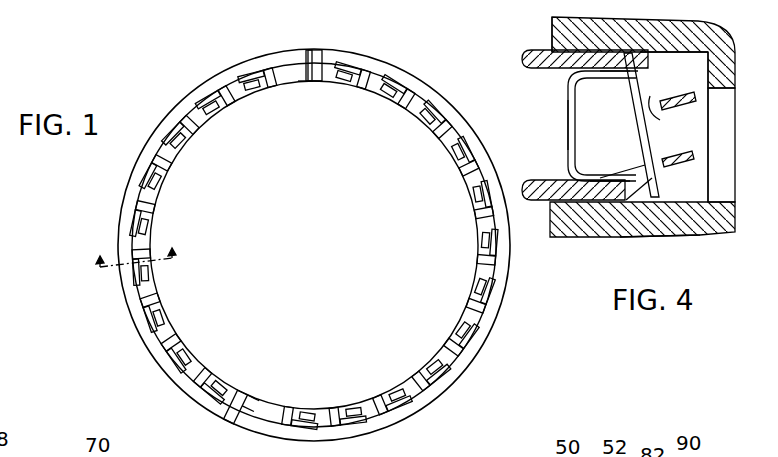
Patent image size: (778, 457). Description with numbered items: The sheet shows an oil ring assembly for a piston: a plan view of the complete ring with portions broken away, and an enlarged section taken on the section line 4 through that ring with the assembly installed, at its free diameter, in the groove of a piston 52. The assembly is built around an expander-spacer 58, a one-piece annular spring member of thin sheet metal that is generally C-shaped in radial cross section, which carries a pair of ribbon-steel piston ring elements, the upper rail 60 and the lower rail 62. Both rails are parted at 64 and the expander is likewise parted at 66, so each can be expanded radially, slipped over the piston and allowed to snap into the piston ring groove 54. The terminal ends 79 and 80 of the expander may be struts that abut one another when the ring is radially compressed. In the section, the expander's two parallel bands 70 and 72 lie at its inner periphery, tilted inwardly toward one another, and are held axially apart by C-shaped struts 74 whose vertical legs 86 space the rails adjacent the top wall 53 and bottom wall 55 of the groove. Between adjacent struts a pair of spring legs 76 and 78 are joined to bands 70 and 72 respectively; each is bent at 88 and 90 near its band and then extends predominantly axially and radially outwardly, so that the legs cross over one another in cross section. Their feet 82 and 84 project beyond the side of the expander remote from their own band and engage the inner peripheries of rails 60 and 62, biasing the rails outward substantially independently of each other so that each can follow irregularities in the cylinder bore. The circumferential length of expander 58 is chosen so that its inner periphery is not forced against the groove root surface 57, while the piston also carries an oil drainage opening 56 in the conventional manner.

In FIG. 1, the section line 4— 4 is at (130, 256).
In FIG. 4, the piston 52 is at (554, 40).
In FIG. 4, the top wall of groove 53 is at (668, 42).
In FIG. 4, the piston ring groove 54 is at (700, 56).
In FIG. 4, the bottom wall of groove 55 is at (665, 206).
In FIG. 4, the oil drainage opening 56 is at (713, 190).
In FIG. 4, the groove root surface 57 is at (706, 132).
In FIG. 1, the expander-spacer 58 is at (452, 160).
In FIG. 4, the expander-spacer 58 is at (566, 96).
In FIG. 1, the upper rail 60 is at (428, 396).
In FIG. 4, the upper rail 60 is at (522, 58).
In FIG. 1, the lower rail 62 is at (497, 302).
In FIG. 4, the lower rail 62 is at (538, 208).
In FIG. 1, the rail parting 64 is at (242, 426).
In FIG. 1, the expander parting 66 is at (306, 82).
In FIG. 1, the band 70 is at (486, 262).
In FIG. 4, the band 70 is at (680, 94).
In FIG. 4, the band 72 is at (658, 166).
In FIG. 4, the strut 74 is at (566, 154).
In FIG. 4, the spring leg 76 is at (628, 86).
In FIG. 4, the spring leg 78 is at (628, 150).
In FIG. 1, the terminal end of expander 79 is at (316, 50).
In FIG. 1, the terminal end of expander 80 is at (324, 54).
In FIG. 4, the foot 82 is at (640, 45).
In FIG. 4, the foot 84 is at (622, 202).
In FIG. 4, the vertical leg of strut 86 is at (566, 127).
In FIG. 4, the bend 88 is at (648, 205).
In FIG. 4, the bend 90 is at (656, 104).